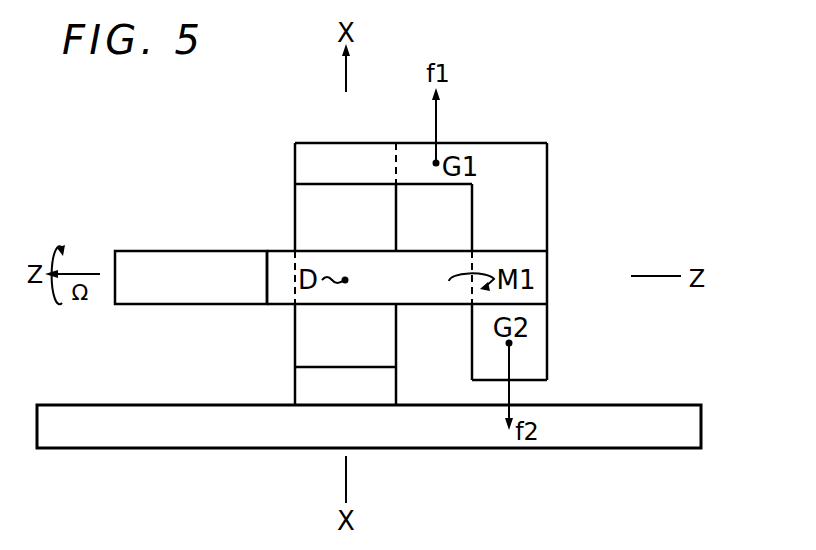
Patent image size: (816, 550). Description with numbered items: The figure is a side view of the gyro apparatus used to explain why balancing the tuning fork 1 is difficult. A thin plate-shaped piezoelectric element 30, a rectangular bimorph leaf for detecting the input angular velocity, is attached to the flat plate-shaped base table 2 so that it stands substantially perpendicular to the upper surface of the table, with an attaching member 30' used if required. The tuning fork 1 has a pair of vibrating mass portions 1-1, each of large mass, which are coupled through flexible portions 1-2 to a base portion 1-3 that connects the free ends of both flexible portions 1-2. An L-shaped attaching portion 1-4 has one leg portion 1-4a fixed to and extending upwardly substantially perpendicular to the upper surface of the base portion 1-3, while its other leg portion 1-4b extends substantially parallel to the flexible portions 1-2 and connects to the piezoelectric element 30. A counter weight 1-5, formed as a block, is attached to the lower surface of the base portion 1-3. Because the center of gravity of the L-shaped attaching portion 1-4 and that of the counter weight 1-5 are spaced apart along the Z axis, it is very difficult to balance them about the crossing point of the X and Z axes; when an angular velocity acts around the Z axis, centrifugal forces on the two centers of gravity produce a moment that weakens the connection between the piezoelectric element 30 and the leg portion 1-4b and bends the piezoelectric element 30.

The tuning fork 1 is at (269, 172).
The vibrating mass portion 1-1 is at (150, 255).
The flexible portion 1-2 is at (281, 257).
The base portion 1-3 is at (548, 295).
The L-shaped attaching portion 1-4 is at (515, 160).
The leg portion 1-4a is at (548, 179).
The leg portion 1-4b is at (342, 158).
The counter weight 1-5 is at (548, 358).
The base table 2 is at (637, 438).
The piezoelectric element 30 is at (314, 354).
The attaching member 30' is at (339, 433).